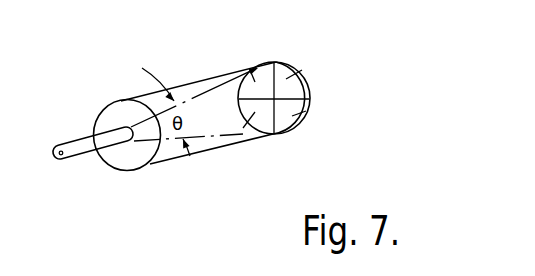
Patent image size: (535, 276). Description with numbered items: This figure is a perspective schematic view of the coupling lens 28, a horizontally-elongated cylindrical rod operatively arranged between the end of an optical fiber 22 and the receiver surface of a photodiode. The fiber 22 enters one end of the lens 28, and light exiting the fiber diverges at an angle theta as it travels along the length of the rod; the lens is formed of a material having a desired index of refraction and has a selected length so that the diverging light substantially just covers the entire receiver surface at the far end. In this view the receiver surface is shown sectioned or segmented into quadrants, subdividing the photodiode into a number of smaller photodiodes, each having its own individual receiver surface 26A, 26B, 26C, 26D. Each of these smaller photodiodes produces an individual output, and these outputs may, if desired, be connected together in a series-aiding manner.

The optical fiber 22 is at (80, 139).
The coupling lens 28 is at (190, 81).
The individual receiver surface 26A is at (302, 70).
The individual receiver surface 26B is at (306, 111).
The individual receiver surface 26C is at (250, 70).
The individual receiver surface 26D is at (243, 128).